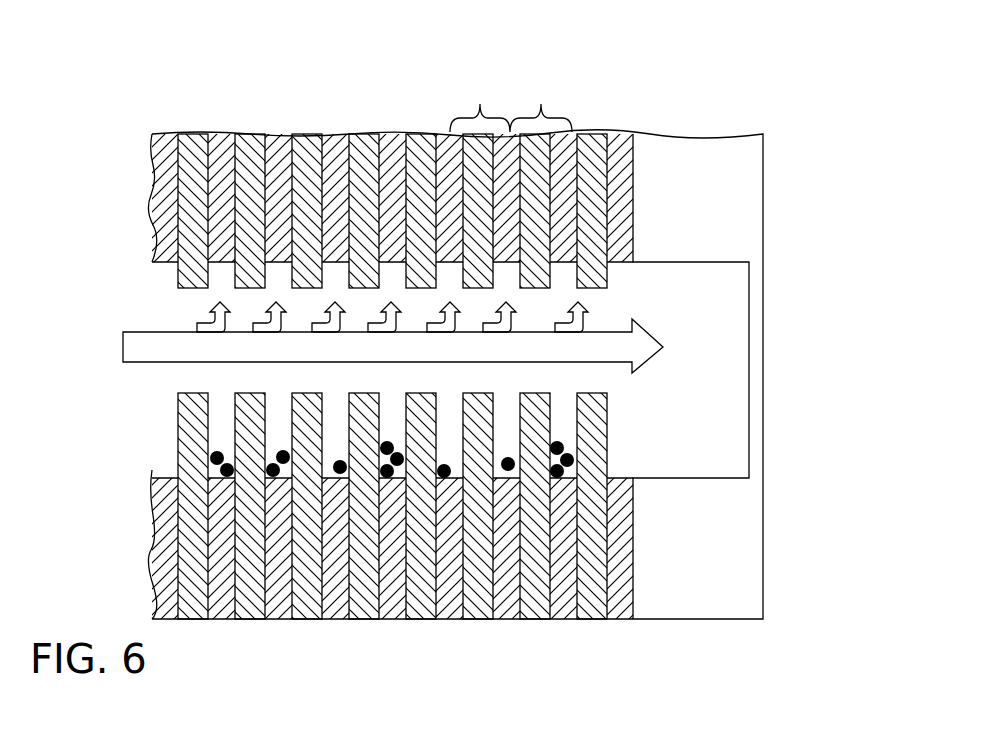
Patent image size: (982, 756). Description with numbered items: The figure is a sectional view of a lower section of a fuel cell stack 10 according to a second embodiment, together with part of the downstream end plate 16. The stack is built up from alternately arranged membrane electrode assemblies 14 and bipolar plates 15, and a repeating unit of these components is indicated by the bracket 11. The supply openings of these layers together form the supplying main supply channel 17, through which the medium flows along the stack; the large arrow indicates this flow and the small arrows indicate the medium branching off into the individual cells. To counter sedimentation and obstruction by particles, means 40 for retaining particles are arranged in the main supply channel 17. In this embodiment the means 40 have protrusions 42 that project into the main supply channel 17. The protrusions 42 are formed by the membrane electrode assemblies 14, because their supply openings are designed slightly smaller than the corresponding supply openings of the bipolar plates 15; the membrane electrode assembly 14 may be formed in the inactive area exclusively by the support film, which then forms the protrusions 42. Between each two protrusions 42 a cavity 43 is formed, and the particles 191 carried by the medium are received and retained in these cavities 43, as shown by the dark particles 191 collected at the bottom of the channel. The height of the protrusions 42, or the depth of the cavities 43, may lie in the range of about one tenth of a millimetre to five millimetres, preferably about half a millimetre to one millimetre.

The fuel cell stack 10 is at (151, 80).
The unit cell segment 11 is at (511, 103).
The membrane electrode assembly 14 is at (480, 165).
The bipolar plate 15 is at (338, 167).
The downstream end plate 16 is at (717, 152).
The main supply channel 17 is at (697, 315).
The means for retaining particles 40 is at (702, 397).
The protrusion 42 is at (249, 437).
The cavity 43 is at (503, 425).
The particles 191 is at (557, 448).